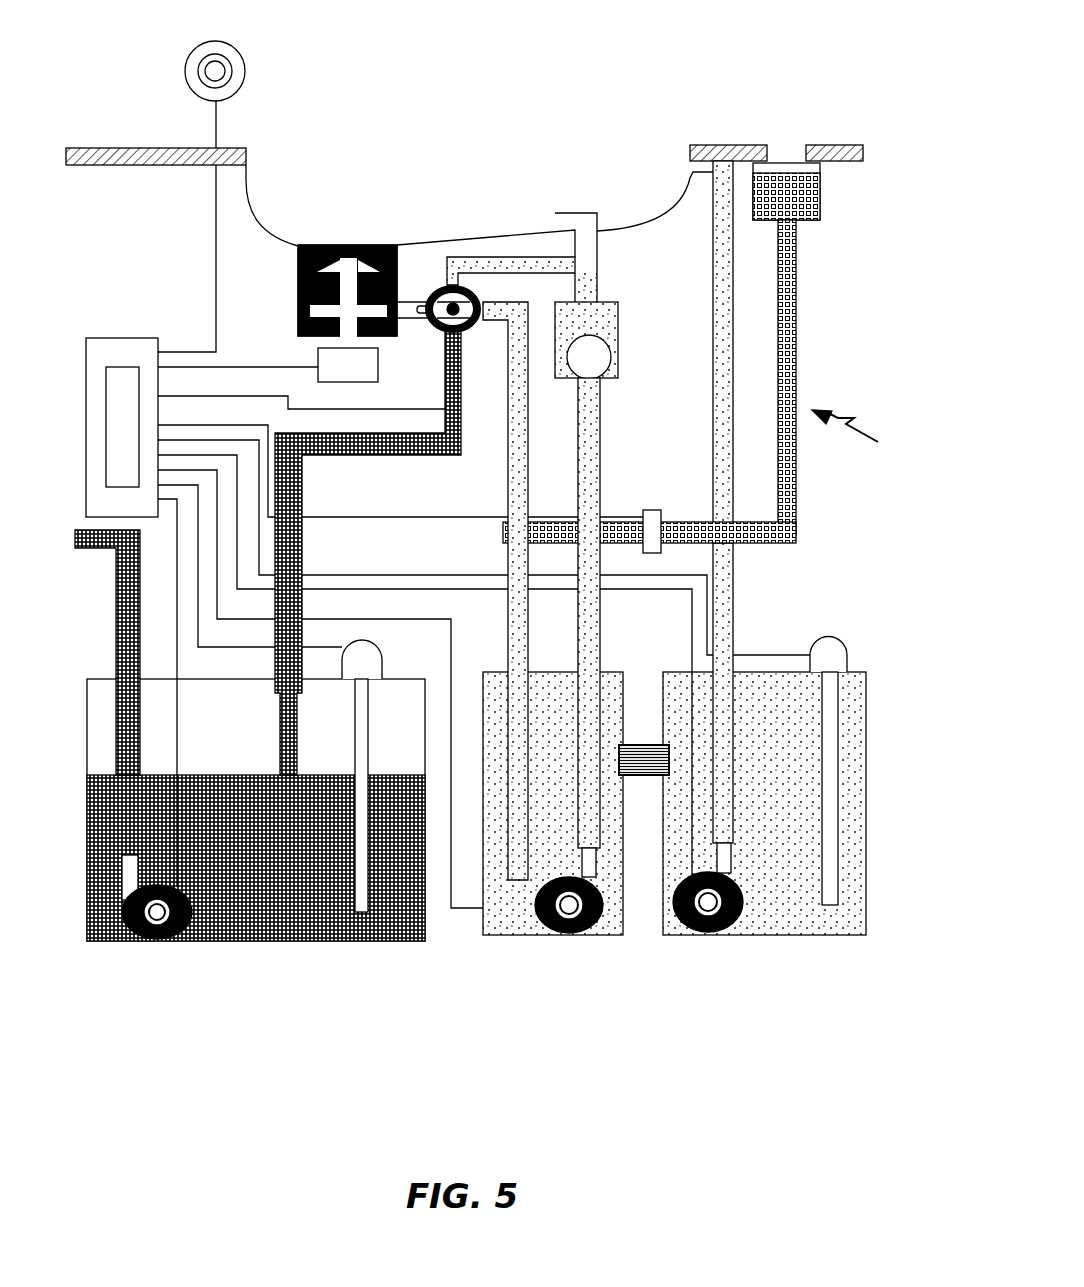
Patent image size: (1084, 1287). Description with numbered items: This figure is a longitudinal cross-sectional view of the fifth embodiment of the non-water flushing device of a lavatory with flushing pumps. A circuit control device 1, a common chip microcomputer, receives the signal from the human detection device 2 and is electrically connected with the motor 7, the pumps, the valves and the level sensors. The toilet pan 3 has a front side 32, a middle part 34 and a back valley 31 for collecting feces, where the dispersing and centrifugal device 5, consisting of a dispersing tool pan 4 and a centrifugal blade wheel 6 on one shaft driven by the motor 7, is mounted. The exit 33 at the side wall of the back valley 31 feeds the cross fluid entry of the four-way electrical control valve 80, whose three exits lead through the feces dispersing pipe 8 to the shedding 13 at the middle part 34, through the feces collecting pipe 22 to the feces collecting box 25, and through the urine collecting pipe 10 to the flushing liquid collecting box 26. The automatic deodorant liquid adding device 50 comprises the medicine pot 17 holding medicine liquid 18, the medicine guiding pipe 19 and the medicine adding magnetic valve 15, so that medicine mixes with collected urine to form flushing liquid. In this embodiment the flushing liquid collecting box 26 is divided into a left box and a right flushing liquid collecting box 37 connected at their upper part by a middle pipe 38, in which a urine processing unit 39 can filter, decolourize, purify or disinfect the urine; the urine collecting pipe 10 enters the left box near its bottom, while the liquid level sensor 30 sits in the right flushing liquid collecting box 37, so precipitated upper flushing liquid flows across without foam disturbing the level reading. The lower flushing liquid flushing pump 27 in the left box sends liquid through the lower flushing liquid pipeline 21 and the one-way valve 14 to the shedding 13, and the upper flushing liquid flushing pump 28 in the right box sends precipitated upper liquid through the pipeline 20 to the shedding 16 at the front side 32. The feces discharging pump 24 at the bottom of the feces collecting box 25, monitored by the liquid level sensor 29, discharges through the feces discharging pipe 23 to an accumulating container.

The circuit control device 1 is at (94, 336).
The human detection device 2 is at (196, 60).
The toilet pan 3 is at (260, 210).
The dispersing tool pan 4 is at (320, 247).
The dispersing and centrifugal device 5 is at (341, 247).
The centrifugal blade wheel 6 is at (397, 332).
The motor 7 is at (373, 368).
The feces dispersing pipe 8 is at (472, 263).
The urine collecting pipe 10 is at (507, 303).
The shedding 13 is at (568, 212).
The one-way valve 14 is at (607, 323).
The medicine adding magnetic valve 15 is at (650, 510).
The shedding 16 is at (730, 160).
The medicine pot 17 is at (766, 150).
The medicine liquid 18 is at (787, 173).
The medicine guiding pipe 19 is at (796, 349).
The pipeline 20 is at (735, 577).
The lower flushing liquid pipeline 21 is at (600, 615).
The feces collecting pipe 22 is at (277, 693).
The feces discharging pipe 23 is at (115, 723).
The feces discharging pump 24 is at (153, 940).
The feces collecting box 25 is at (353, 942).
The flushing liquid collecting box 26 is at (502, 935).
The lower flushing liquid flushing pump 27 is at (563, 933).
The upper flushing liquid flushing pump 28 is at (732, 922).
The liquid level sensor of the feces collecting box 29 is at (353, 720).
The liquid level sensor of the flushing liquid collecting box 30 is at (838, 785).
The back valley 31 is at (298, 283).
The front side 32 is at (658, 212).
The exit 33 is at (413, 298).
The middle part 34 is at (519, 232).
The waste tank 37 is at (680, 933).
The middle pipe 38 is at (637, 773).
The urine processing unit 39 is at (652, 757).
The automatic deodorant liquid adding device 50 is at (866, 437).
The four-way electrical control valve 80 is at (437, 290).